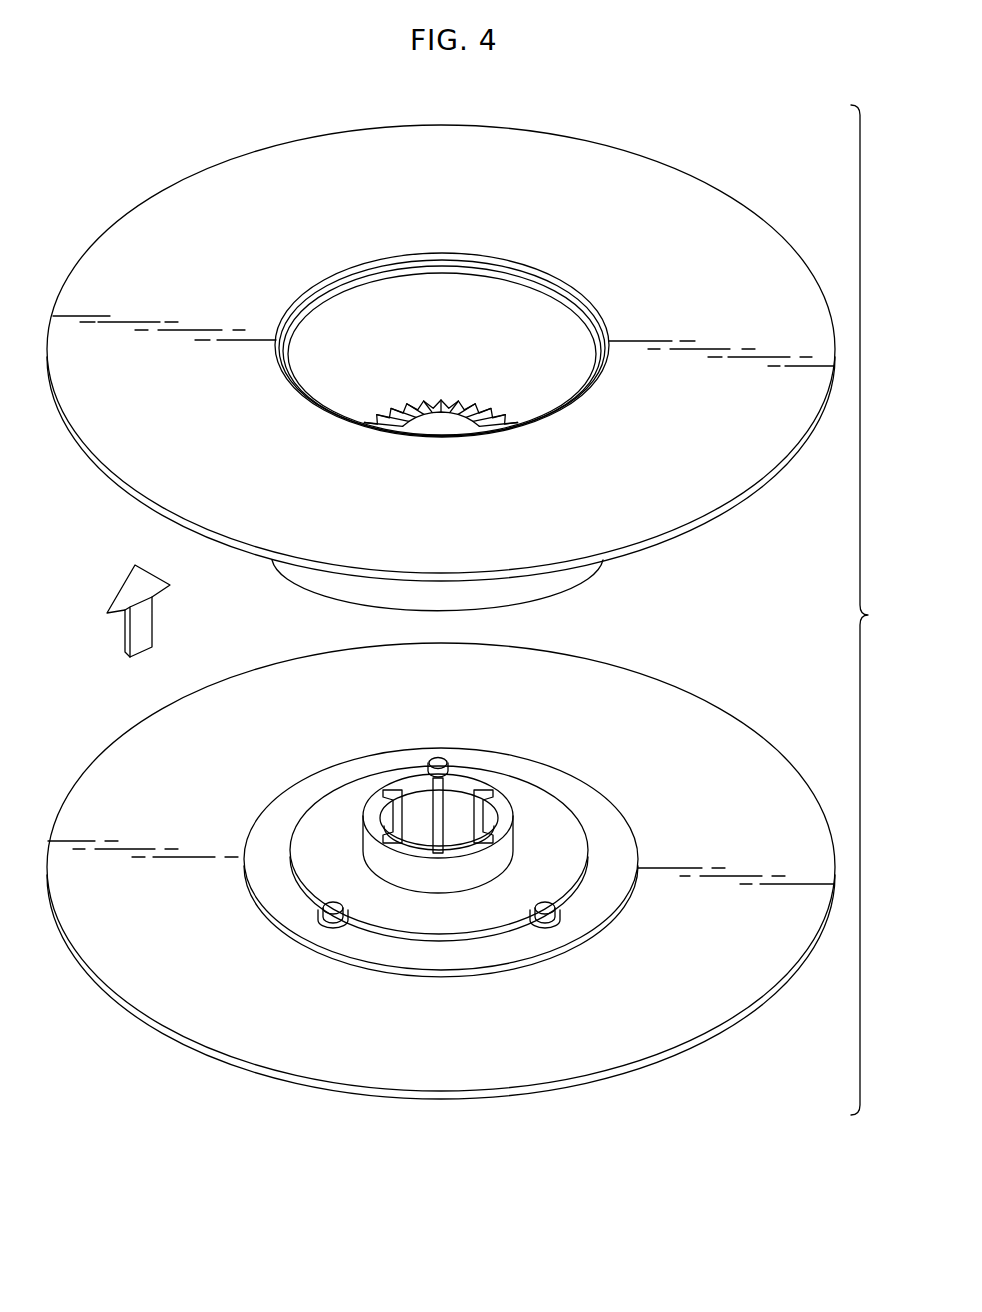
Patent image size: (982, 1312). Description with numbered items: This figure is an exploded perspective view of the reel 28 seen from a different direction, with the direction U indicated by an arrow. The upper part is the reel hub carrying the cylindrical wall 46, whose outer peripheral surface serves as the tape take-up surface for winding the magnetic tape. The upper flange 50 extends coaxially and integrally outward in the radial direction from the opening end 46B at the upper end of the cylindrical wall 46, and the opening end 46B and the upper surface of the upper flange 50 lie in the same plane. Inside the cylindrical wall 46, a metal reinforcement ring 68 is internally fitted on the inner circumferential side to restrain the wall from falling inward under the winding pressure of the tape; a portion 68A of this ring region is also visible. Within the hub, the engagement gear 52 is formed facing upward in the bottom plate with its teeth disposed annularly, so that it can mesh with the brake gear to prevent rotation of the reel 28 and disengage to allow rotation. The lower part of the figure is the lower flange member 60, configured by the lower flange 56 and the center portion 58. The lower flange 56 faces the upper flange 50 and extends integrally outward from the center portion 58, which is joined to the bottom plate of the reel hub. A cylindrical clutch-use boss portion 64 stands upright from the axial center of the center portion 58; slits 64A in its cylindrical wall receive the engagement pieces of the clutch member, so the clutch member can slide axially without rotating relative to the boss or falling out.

The reel 28 is at (742, 143).
The upper flange 50 is at (612, 171).
The opening end 46B is at (554, 288).
The step portion of recess 68A is at (512, 277).
The reinforcement ring 68 is at (463, 289).
The engagement gear 52 is at (456, 383).
The cylindrical wall 46 is at (523, 590).
The lower flange member 60 is at (740, 662).
The lower flange 56 is at (641, 702).
The center portion 58 is at (567, 760).
The clutch-use boss portion 64 is at (468, 783).
The slits 64A is at (430, 800).
The upward direction U is at (147, 620).